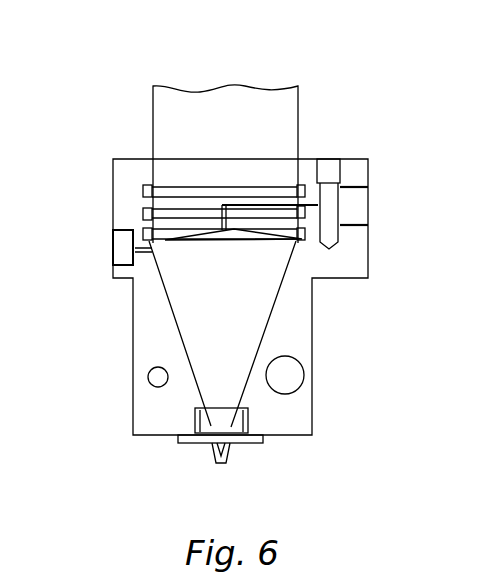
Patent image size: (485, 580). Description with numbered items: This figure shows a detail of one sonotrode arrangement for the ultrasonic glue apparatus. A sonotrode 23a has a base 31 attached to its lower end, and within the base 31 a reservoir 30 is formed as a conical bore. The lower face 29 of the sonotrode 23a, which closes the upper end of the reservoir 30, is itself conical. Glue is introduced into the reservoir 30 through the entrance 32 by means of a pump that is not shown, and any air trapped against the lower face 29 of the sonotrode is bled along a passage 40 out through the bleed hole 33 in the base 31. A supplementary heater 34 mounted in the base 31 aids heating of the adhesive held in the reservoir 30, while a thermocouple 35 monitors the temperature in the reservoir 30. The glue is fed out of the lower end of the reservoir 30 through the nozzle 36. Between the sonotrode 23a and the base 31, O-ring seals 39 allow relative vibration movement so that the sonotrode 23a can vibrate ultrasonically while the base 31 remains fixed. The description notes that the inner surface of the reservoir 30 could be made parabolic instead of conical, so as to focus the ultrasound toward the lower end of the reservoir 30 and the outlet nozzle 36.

The sonotrode 23a is at (278, 107).
The lower face 29 is at (190, 237).
The reservoir 30 is at (273, 305).
The base 31 is at (131, 330).
The entrance 32 is at (122, 251).
The bleed hole 33 is at (337, 203).
The supplementary heater 34 is at (303, 392).
The thermocouple 35 is at (148, 375).
The nozzle 36 is at (226, 458).
The O-ring seals 39 is at (142, 232).
The passage 40 is at (238, 203).